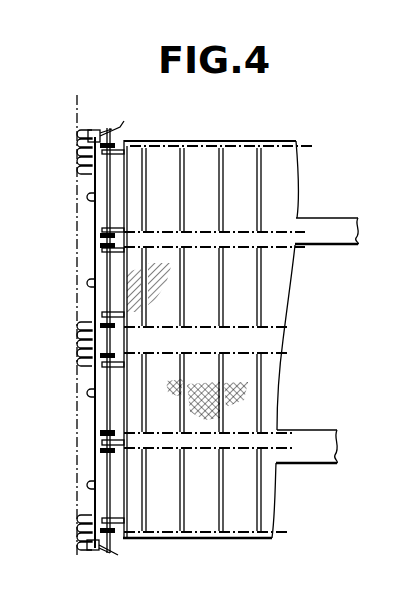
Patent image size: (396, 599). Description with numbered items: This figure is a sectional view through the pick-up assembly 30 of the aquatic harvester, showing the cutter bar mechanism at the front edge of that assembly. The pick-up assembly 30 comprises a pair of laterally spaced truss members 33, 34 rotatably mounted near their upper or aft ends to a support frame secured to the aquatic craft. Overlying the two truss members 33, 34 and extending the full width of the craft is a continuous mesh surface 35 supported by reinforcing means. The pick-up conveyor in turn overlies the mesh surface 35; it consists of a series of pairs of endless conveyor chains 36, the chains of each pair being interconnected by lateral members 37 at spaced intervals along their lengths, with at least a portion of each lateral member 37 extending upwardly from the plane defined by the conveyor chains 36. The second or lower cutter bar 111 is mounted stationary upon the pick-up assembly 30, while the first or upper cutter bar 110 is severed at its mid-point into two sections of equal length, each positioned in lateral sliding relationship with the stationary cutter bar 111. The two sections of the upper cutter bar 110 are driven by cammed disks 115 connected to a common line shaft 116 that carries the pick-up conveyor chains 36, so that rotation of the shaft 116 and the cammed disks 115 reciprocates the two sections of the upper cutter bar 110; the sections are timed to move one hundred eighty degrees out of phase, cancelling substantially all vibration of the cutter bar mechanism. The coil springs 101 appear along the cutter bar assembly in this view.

The pick-up assembly 30 is at (317, 130).
The truss member 33 is at (305, 433).
The truss member 34 is at (330, 238).
The continuous mesh surface 35 is at (150, 282).
The endless conveyor chains 36 is at (193, 230).
The lateral members 37 is at (261, 212).
The springs 101 is at (76, 170).
The upper cutter bar 110 is at (85, 221).
The lower cutter bar 111 is at (100, 468).
The cammed disks 115 is at (120, 127).
The common line shaft 116 is at (108, 265).